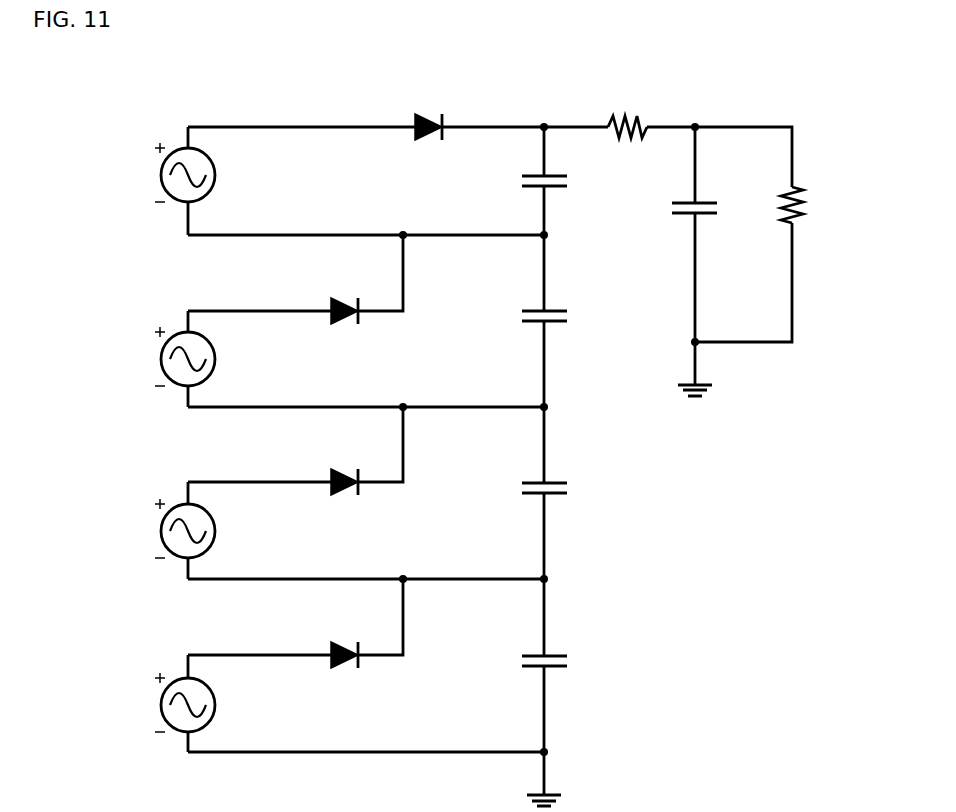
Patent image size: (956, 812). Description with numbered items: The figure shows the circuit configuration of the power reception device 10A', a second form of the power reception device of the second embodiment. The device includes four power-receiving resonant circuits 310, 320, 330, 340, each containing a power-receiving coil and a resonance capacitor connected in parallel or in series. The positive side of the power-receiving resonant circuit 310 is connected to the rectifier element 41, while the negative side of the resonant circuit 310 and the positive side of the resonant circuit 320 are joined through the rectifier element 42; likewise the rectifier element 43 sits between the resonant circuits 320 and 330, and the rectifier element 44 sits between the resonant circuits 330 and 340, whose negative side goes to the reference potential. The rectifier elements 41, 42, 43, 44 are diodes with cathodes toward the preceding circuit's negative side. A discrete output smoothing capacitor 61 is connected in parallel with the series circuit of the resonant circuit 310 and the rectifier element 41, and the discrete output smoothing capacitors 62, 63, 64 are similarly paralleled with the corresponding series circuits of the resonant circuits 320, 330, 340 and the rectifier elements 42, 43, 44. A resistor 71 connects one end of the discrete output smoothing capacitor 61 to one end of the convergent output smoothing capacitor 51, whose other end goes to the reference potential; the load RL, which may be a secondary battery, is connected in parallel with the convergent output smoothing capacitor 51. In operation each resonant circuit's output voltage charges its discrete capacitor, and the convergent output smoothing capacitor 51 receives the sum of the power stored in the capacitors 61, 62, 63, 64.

The power reception device 10A' is at (495, 422).
The power-receiving resonant circuit 310 is at (221, 165).
The power-receiving resonant circuit 320 is at (221, 344).
The power-receiving resonant circuit 330 is at (221, 515).
The power-receiving resonant circuit 340 is at (221, 688).
The rectifier element 41 is at (437, 112).
The rectifier element 42 is at (346, 295).
The rectifier element 43 is at (346, 466).
The rectifier element 44 is at (346, 639).
The discrete output smoothing capacitor 61 is at (517, 182).
The discrete output smoothing capacitor 62 is at (517, 317).
The discrete output smoothing capacitor 63 is at (517, 489).
The discrete output smoothing capacitor 64 is at (517, 661).
The convergent output smoothing capacitor 51 is at (712, 196).
The resistor 71 is at (621, 107).
The load RL is at (808, 187).